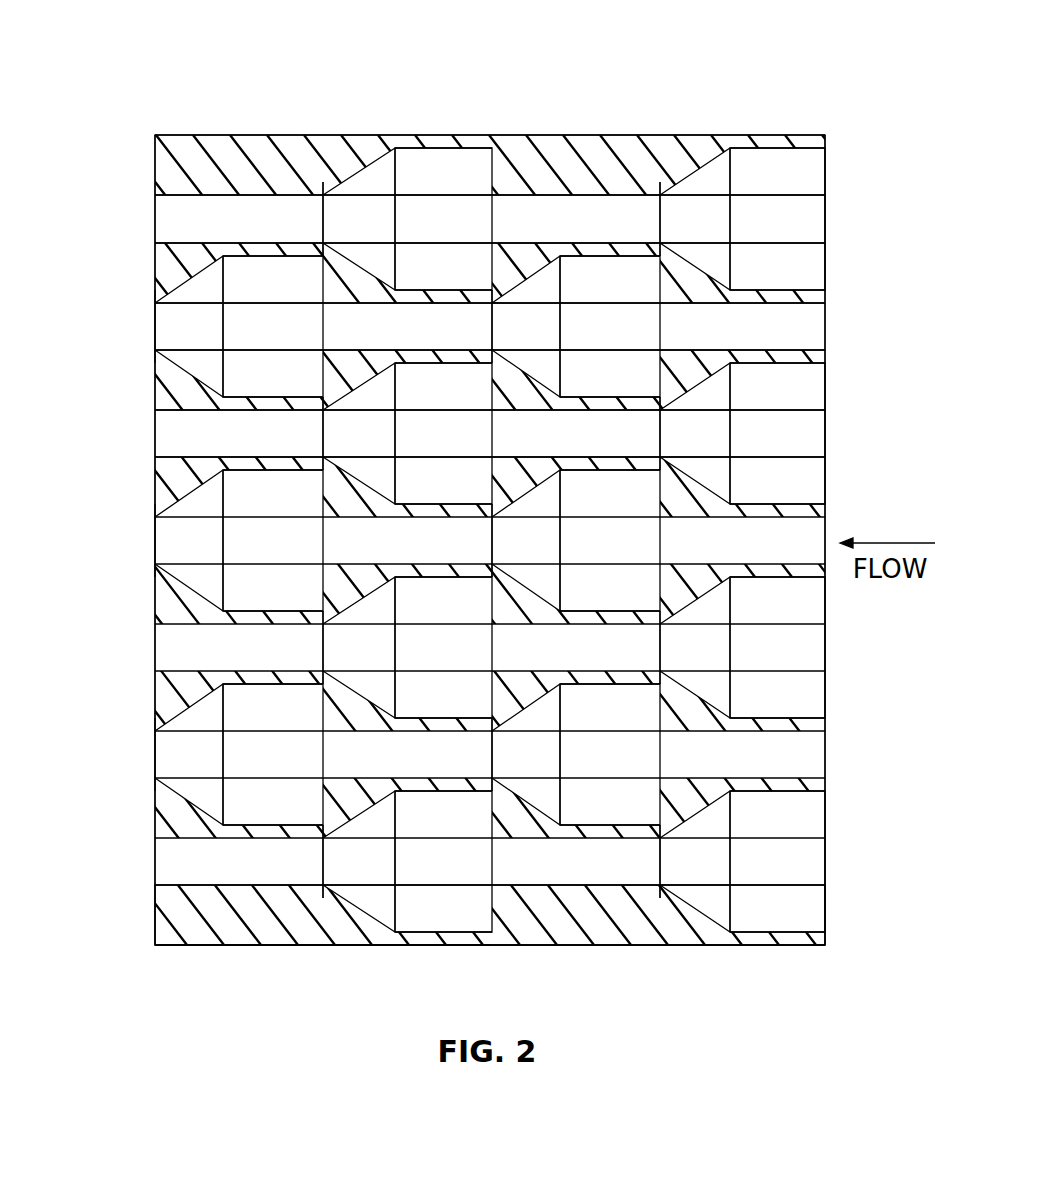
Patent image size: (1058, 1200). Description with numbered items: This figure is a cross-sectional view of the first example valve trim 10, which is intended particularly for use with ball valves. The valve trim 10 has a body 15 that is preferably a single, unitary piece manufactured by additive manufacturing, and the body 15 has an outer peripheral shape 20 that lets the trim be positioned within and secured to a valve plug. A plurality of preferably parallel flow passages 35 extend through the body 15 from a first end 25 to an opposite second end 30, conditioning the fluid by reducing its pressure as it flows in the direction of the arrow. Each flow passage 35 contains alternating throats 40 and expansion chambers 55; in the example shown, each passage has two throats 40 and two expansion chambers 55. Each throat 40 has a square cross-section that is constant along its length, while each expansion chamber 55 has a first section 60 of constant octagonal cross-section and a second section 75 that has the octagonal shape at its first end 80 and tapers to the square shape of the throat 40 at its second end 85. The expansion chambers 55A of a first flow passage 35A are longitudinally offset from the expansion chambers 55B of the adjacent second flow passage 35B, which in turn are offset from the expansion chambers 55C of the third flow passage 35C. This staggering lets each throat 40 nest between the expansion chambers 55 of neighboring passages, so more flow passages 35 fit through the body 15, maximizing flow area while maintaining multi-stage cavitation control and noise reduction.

The valve trim 10 is at (176, 52).
The body 15 is at (570, 928).
The outer peripheral shape 20 is at (250, 958).
The first end 25 is at (832, 354).
The second end 30 is at (144, 592).
The flow passage 35 is at (420, 540).
The first flow passage 35A is at (174, 216).
The second flow passage 35B is at (174, 325).
The third flow passage 35C is at (174, 432).
The throat 40 is at (242, 240).
The expansion chamber 55 is at (489, 535).
The expansion chamber of the first flow passage 55A is at (447, 136).
The expansion chamber of the second flow passage 55B is at (564, 338).
The expansion chamber of the third flow passage 55C is at (484, 445).
The first section 60 is at (626, 256).
The second section 75 is at (204, 272).
The first end 80 is at (226, 325).
The second end 85 is at (326, 220).